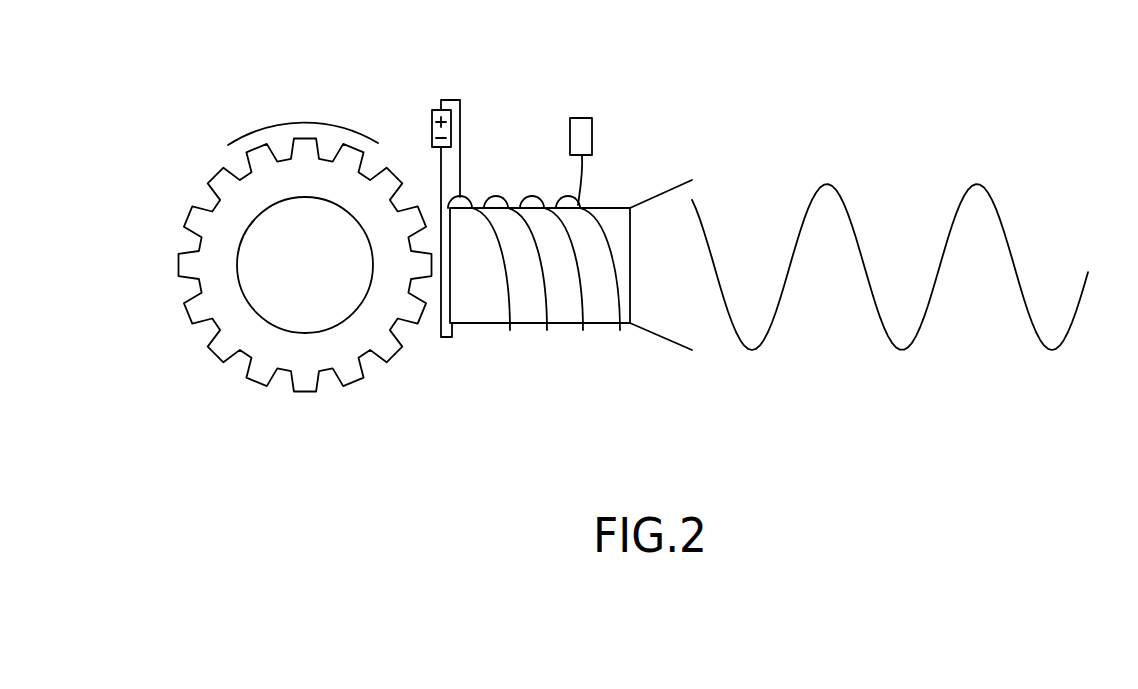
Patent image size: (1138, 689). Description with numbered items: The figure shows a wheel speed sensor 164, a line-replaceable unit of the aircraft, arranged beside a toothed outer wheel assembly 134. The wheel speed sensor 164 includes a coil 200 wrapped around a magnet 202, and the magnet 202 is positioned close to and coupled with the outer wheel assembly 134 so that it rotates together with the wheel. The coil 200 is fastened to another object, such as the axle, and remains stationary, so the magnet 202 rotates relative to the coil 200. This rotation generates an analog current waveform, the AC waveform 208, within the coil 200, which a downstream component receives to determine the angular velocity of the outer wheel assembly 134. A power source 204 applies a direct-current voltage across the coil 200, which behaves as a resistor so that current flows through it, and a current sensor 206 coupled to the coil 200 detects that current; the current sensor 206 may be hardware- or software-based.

The outer wheel assembly 134 is at (313, 393).
The wheel speed sensor 164 is at (473, 72).
The coil 200 is at (512, 313).
The magnet 202 is at (485, 318).
The power source 204 is at (432, 113).
The current sensor 206 is at (592, 123).
The AC waveform 208 is at (1033, 333).